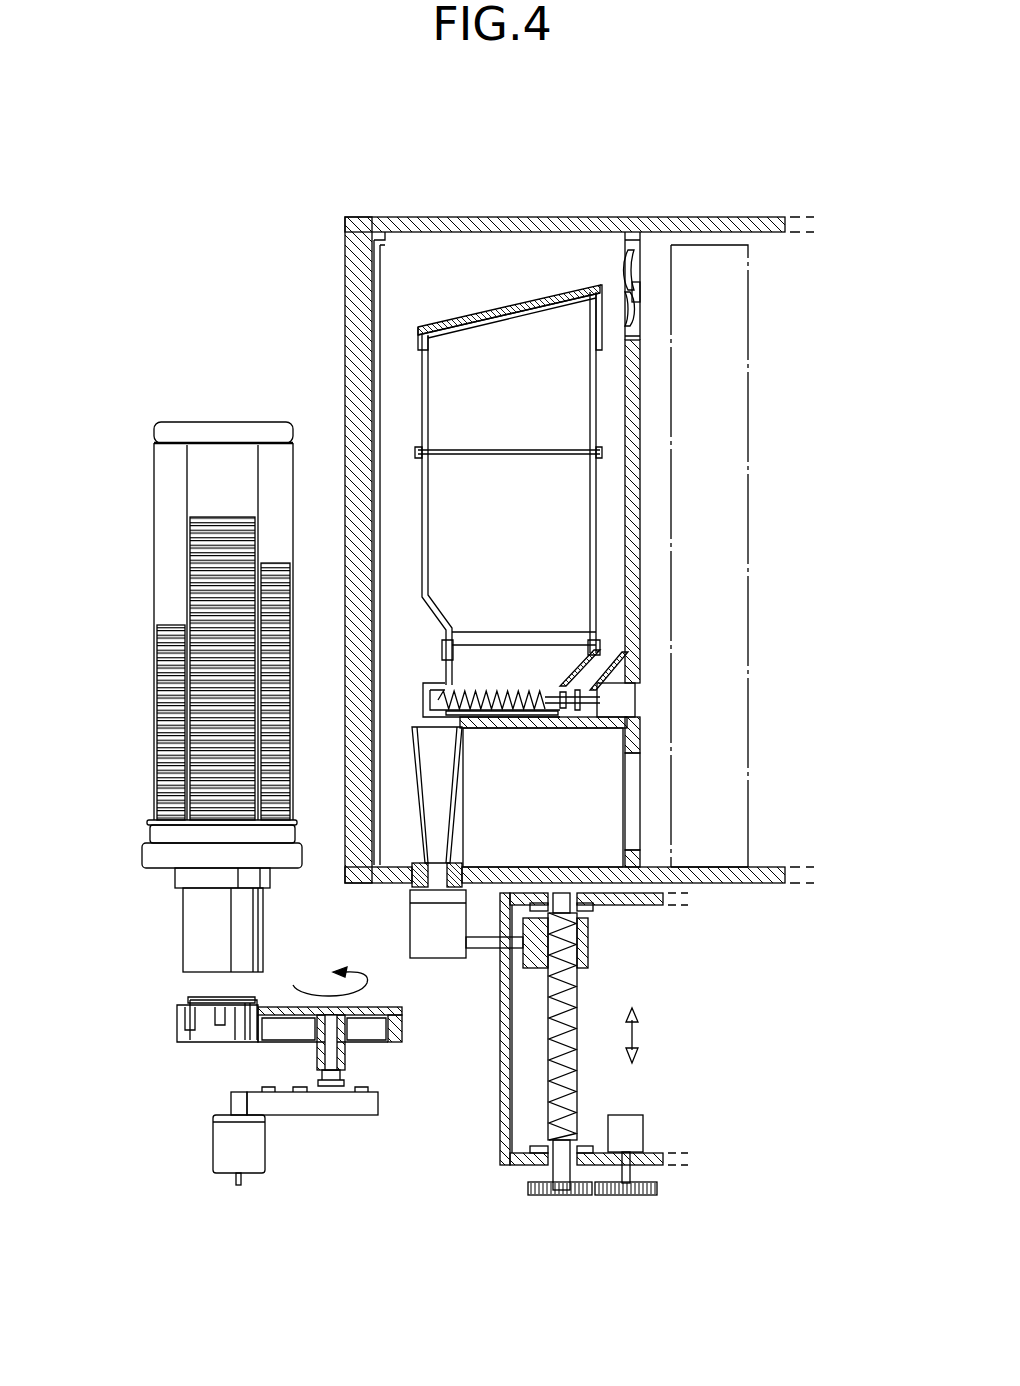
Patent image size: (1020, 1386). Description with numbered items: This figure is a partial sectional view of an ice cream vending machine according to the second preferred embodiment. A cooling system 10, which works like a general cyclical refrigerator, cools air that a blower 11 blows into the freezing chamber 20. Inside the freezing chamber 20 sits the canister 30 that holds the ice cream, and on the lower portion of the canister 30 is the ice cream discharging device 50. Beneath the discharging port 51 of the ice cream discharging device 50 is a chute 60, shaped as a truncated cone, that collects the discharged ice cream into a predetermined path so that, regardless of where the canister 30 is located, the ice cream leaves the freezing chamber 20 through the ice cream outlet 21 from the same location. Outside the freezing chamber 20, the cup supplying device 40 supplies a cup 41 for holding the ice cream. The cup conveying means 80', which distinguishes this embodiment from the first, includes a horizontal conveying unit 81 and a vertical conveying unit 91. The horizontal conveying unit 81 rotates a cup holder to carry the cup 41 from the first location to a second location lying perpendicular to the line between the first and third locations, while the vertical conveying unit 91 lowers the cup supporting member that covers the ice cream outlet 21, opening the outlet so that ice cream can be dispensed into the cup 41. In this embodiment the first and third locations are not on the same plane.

The cooling system 10 is at (750, 487).
The blower 11 is at (633, 265).
The freezing chamber 20 is at (530, 217).
The ice cream outlet 21 is at (410, 895).
The canister 30 is at (597, 578).
The cup supplying device 40 is at (156, 624).
The cup 41 is at (195, 1027).
The ice cream discharging device 50 is at (531, 716).
The discharging port 51 is at (443, 712).
The chute 60 is at (456, 790).
The cup conveying means 80' is at (399, 1265).
The horizontal conveying unit 81 is at (335, 1132).
The vertical conveying unit 91 is at (447, 1133).